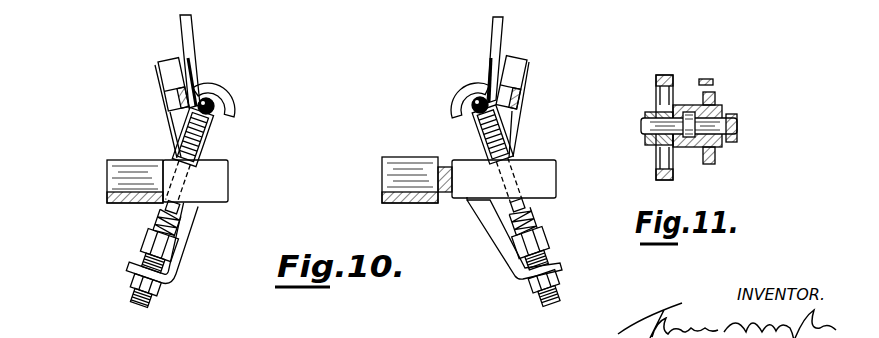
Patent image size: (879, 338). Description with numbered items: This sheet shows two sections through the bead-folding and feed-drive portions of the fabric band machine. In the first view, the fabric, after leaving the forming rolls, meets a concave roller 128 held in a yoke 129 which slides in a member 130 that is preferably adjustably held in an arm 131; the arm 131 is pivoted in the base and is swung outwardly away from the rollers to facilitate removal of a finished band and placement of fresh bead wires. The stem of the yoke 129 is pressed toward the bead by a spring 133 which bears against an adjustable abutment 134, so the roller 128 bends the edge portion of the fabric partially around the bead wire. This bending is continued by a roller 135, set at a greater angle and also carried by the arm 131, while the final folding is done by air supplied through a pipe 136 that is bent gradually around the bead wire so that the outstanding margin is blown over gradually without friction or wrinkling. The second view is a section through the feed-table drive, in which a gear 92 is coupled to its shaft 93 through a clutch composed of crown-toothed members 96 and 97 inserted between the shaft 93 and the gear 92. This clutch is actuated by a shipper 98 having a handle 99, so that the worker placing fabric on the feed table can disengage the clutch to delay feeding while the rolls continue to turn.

In FIG. 11, the gear 92 is at (667, 77).
In FIG. 11, the shaft 93 is at (645, 127).
In FIG. 11, the crown-toothed clutch member 96 is at (678, 105).
In FIG. 11, the crown-toothed clutch member 97 is at (691, 104).
In FIG. 11, the shipper 98 is at (715, 98).
In FIG. 11, the handle 99 is at (712, 82).
In FIG. 10, the concave roller 128 is at (213, 123).
In FIG. 11, the concave roller 128 is at (478, 125).
In FIG. 10, the yoke 129 is at (177, 160).
In FIG. 11, the yoke 129 is at (513, 153).
In FIG. 10, the member 130 is at (213, 185).
In FIG. 11, the member 130 is at (543, 183).
In FIG. 10, the arm 131 is at (123, 207).
In FIG. 11, the arm 131 is at (407, 197).
In FIG. 10, the spring 133 is at (178, 224).
In FIG. 11, the spring 133 is at (535, 218).
In FIG. 10, the adjustable abutment 134 is at (172, 250).
In FIG. 11, the adjustable abutment 134 is at (548, 242).
In FIG. 10, the roller 135 is at (160, 86).
In FIG. 11, the roller 135 is at (527, 82).
In FIG. 10, the air pipe 136 is at (190, 58).
In FIG. 11, the air pipe 136 is at (500, 58).